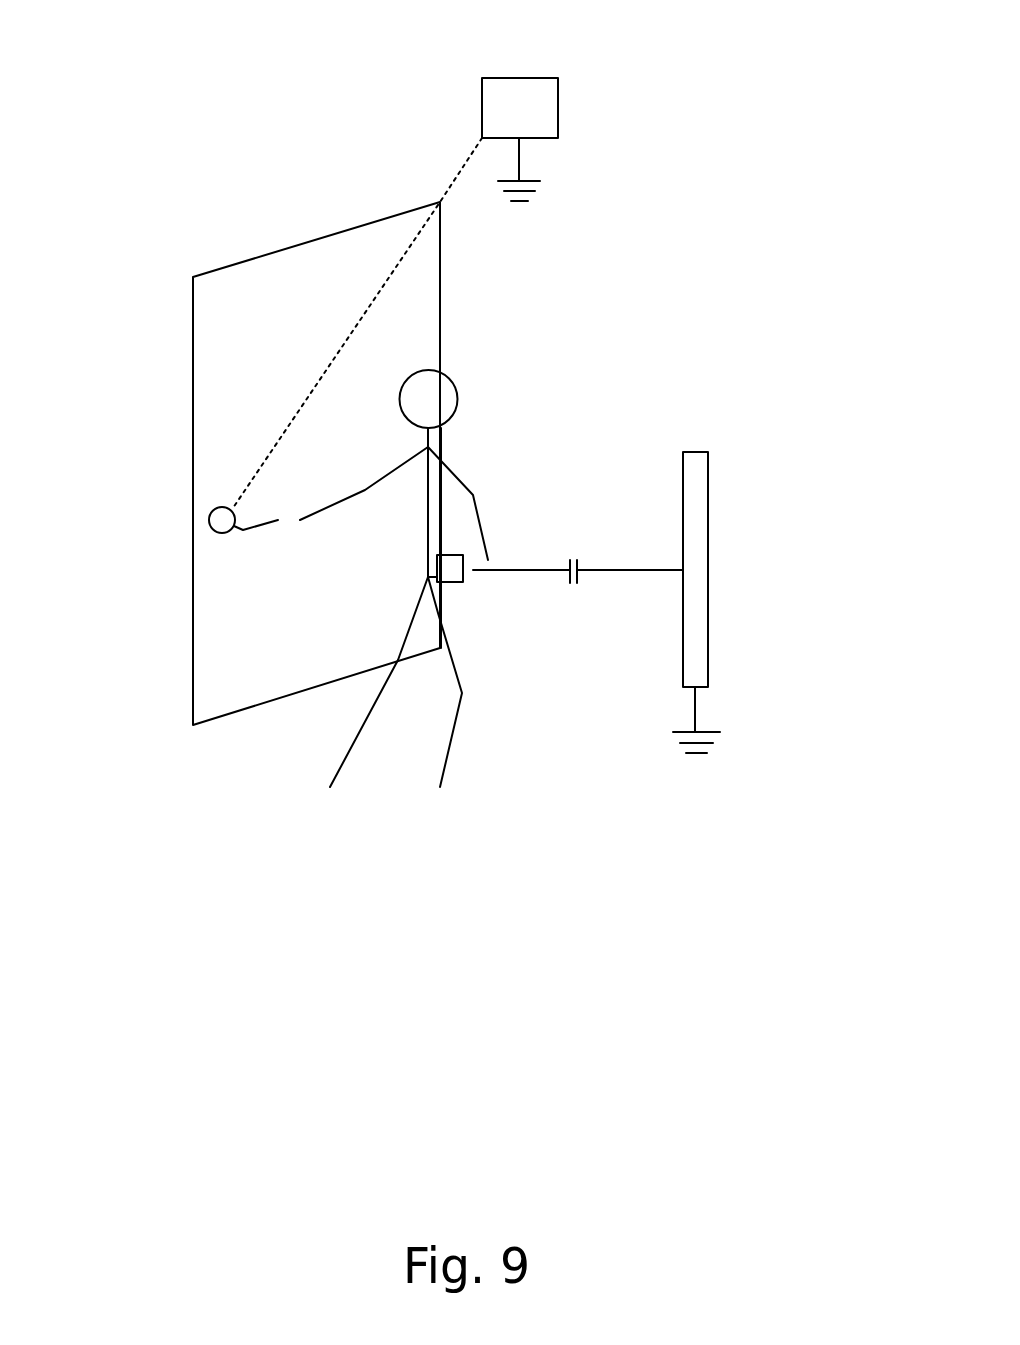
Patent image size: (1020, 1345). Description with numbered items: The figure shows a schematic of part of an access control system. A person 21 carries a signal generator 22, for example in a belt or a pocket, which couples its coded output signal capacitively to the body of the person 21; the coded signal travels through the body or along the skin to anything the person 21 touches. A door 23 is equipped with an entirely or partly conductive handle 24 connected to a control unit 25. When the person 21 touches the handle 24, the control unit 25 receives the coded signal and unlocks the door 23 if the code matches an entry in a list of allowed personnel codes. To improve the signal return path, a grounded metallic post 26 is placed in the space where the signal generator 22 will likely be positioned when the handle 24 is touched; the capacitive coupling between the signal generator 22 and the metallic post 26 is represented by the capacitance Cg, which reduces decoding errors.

The person 21 is at (478, 465).
The signal generator 22 is at (466, 595).
The door 23 is at (233, 693).
The handle 24 is at (233, 557).
The control unit 25 is at (537, 112).
The metallic post 26 is at (693, 613).
The capacitance Cg is at (573, 603).